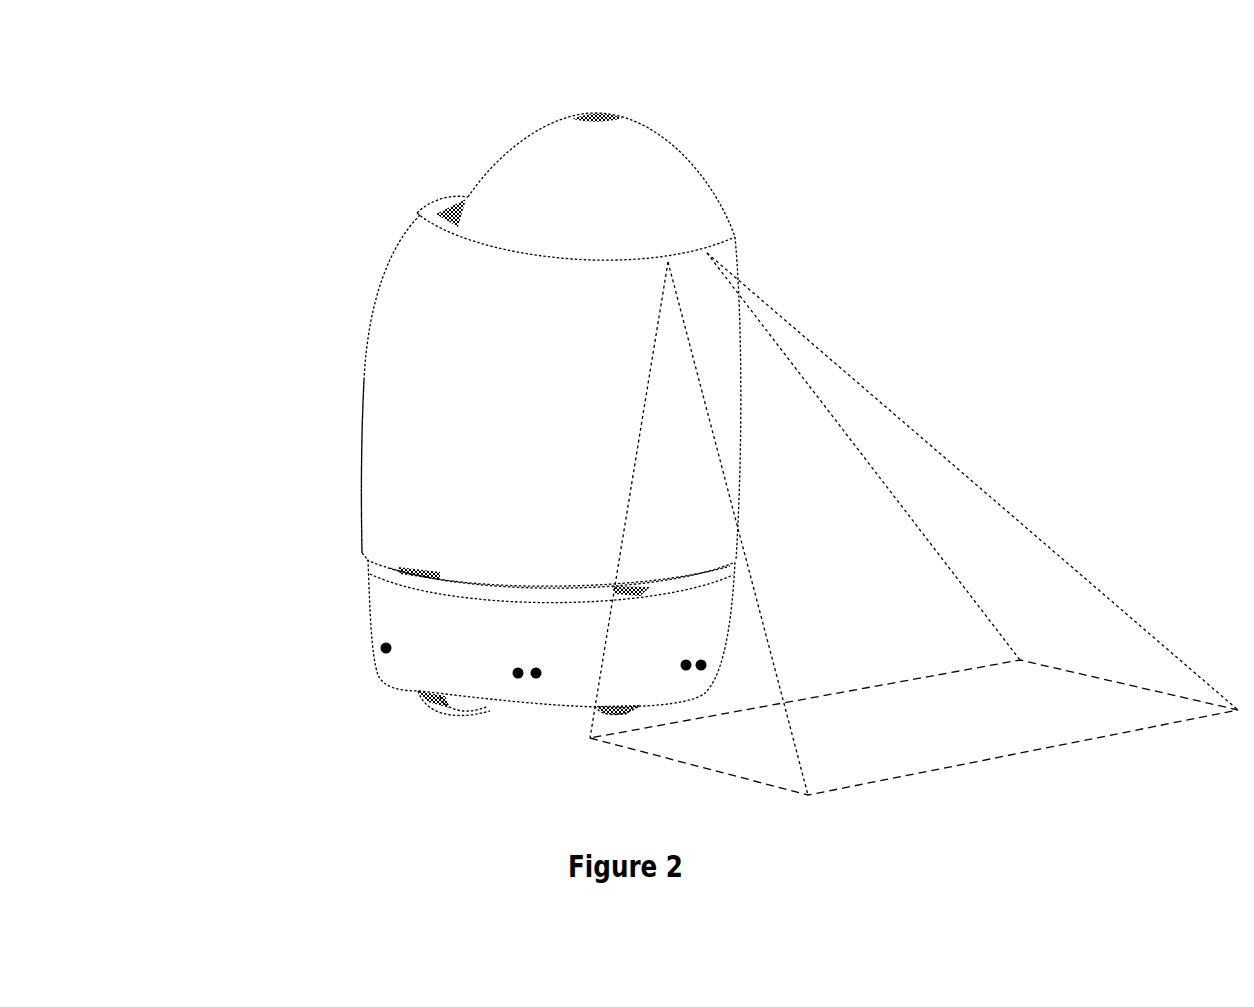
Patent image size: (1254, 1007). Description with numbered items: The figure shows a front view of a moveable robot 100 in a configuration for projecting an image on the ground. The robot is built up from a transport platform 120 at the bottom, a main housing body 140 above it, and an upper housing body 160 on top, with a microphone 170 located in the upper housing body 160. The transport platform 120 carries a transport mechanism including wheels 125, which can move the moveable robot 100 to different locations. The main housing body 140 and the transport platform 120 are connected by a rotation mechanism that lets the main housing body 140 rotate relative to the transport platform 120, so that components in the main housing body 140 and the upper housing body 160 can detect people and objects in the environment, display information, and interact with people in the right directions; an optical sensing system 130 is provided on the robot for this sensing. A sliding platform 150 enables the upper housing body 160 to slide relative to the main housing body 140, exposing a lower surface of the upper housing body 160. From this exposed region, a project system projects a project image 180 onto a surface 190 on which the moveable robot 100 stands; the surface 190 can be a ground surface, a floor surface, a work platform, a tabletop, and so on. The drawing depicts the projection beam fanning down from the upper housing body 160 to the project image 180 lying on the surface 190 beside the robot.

The moveable robot 100 is at (373, 330).
The transport platform 120 is at (398, 622).
The wheels 125 is at (443, 706).
The optical sensing system 130 is at (655, 592).
The main housing body 140 is at (408, 468).
The sliding platform 150 is at (432, 220).
The upper housing body 160 is at (670, 175).
The microphone 170 is at (605, 112).
The project image 180 is at (999, 718).
The surface 190 is at (1171, 763).